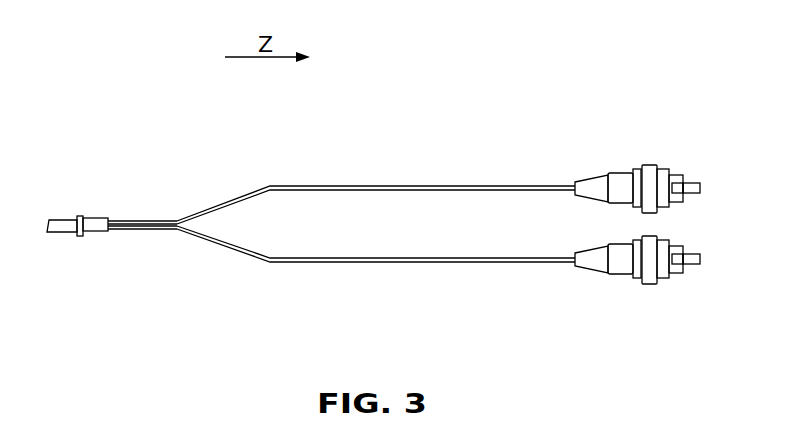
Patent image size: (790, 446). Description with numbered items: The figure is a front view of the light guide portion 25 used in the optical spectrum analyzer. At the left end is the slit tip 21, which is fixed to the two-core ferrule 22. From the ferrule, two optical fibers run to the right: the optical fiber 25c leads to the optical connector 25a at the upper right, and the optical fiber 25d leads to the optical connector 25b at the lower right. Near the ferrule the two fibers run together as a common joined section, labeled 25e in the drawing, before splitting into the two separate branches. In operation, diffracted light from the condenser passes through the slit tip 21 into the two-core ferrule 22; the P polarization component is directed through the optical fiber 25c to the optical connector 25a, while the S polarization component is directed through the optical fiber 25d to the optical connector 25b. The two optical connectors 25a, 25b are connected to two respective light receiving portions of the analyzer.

The slit tip 21 is at (51, 218).
The 2-core ferrule 22 is at (96, 215).
The light guide portion 25 is at (435, 118).
The optical connector 25a is at (651, 165).
The optical connector 25b is at (652, 284).
The optical fiber 25c is at (524, 180).
The optical fiber 25d is at (522, 265).
The joint portion 25e is at (127, 244).